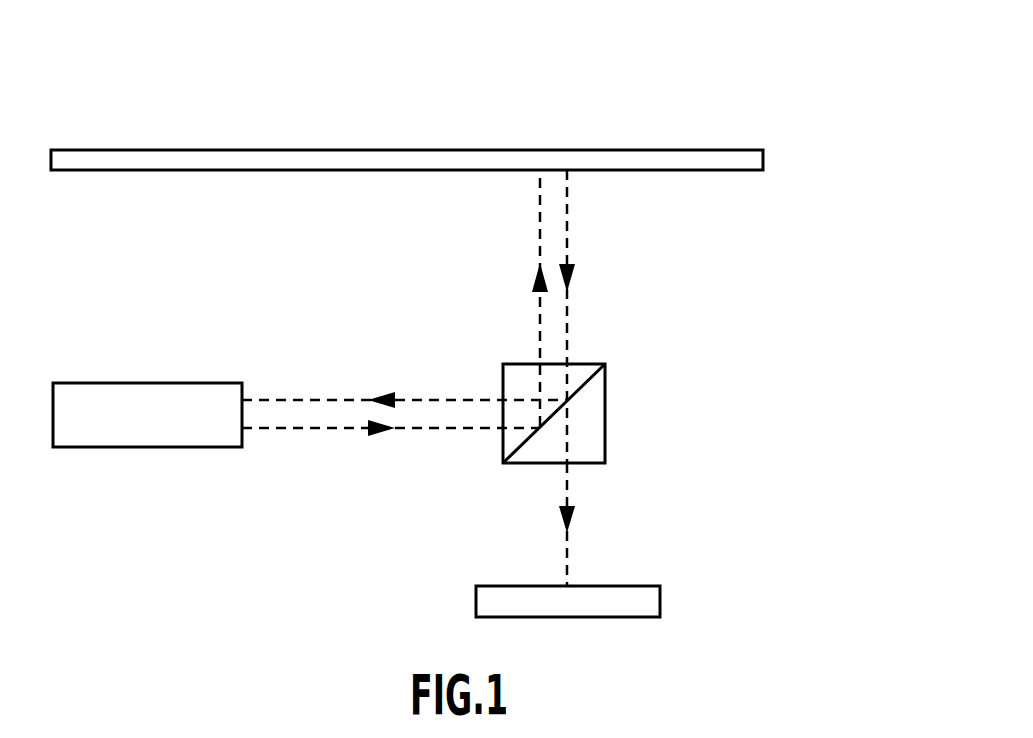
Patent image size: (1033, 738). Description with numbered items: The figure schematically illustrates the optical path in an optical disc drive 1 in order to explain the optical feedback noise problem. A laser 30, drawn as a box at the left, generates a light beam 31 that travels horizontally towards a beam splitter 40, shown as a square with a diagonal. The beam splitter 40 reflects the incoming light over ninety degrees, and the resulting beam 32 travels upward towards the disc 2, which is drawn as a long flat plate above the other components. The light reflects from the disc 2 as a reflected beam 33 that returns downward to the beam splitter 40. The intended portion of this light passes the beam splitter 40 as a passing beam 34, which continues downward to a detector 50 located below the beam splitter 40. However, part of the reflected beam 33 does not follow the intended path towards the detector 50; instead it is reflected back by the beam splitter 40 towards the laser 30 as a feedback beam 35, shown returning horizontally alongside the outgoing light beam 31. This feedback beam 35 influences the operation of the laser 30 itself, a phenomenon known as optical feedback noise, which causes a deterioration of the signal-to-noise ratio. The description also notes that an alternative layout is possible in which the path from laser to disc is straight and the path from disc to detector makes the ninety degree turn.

The optical disc drive 1 is at (783, 98).
The disc 2 is at (630, 150).
The laser 30 is at (86, 447).
The light beam 31 is at (390, 452).
The beam 32 is at (517, 298).
The reflected beam 33 is at (589, 316).
The passing beam 34 is at (589, 524).
The feedback beam 35 is at (405, 379).
The beam splitter 40 is at (605, 400).
The detector 50 is at (640, 586).